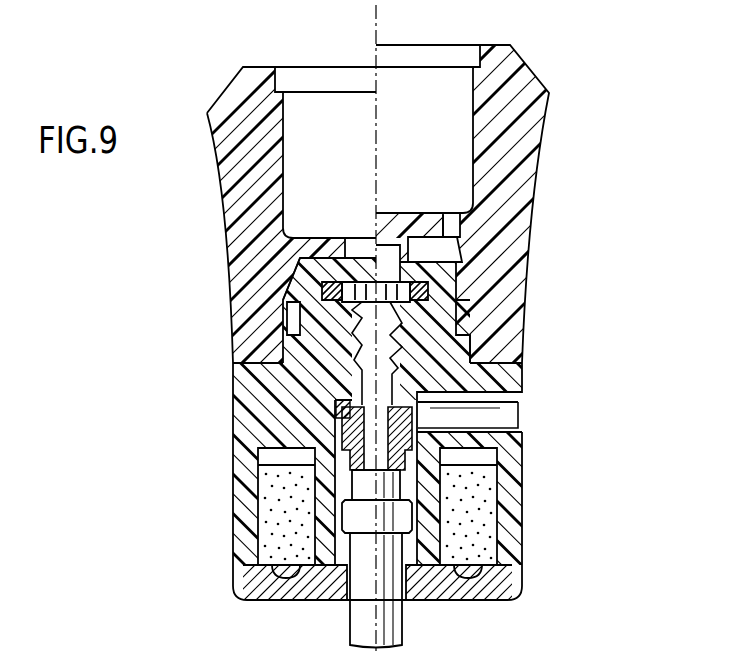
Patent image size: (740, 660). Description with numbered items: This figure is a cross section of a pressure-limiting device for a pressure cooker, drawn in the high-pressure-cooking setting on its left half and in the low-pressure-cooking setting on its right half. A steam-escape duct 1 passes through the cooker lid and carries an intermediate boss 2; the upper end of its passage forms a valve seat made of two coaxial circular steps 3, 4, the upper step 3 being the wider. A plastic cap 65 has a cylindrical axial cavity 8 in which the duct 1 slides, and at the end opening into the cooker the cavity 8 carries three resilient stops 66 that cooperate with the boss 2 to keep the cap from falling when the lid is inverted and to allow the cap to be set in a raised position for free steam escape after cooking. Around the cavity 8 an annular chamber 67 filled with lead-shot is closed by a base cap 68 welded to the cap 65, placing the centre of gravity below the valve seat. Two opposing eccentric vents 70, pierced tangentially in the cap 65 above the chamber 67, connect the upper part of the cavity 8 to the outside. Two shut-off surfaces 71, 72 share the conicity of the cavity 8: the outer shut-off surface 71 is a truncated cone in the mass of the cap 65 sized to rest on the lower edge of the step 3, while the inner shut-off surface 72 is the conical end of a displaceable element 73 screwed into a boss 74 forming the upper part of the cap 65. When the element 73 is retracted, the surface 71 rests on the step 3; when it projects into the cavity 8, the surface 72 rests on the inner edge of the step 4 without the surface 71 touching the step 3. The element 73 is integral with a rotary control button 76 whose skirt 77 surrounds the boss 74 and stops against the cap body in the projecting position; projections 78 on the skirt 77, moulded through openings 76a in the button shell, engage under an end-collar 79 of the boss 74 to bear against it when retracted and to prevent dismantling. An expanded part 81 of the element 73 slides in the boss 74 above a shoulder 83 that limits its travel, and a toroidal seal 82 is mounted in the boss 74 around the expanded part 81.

The steam-escape duct 1 is at (393, 632).
The intermediate boss 2 is at (470, 590).
The upper step 3 is at (340, 410).
The lower step 4 is at (330, 425).
The cylindrical axial cavity 8 is at (290, 590).
The cap 65 is at (543, 534).
The resilient stops 66 is at (340, 600).
The annular chamber 67 is at (270, 525).
The base cap 68 is at (250, 600).
The eccentric vents 70 is at (505, 425).
The outer shut-off surface 71 is at (430, 410).
The inner shut-off surface 72 is at (405, 390).
The displaceable element 73 is at (535, 259).
The boss 74 is at (312, 318).
The rotary control button 76 is at (520, 130).
The openings 76a is at (448, 222).
The skirt 77 is at (495, 305).
The projections 78 is at (455, 333).
The end-collar 79 is at (455, 288).
The expanded part 81 is at (362, 282).
The toroidal seal 82 is at (327, 285).
The shoulder 83 is at (338, 338).